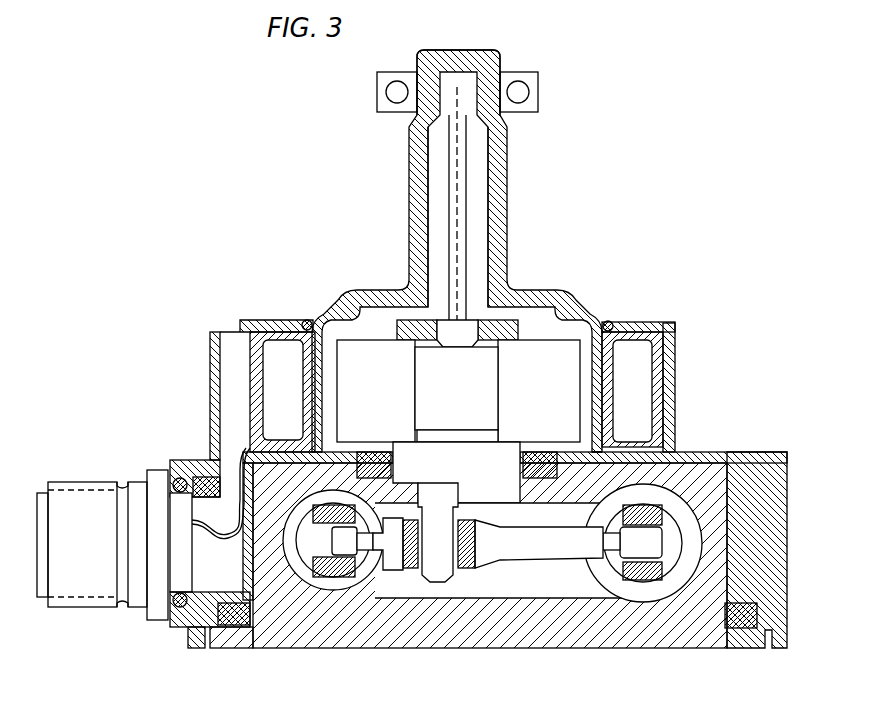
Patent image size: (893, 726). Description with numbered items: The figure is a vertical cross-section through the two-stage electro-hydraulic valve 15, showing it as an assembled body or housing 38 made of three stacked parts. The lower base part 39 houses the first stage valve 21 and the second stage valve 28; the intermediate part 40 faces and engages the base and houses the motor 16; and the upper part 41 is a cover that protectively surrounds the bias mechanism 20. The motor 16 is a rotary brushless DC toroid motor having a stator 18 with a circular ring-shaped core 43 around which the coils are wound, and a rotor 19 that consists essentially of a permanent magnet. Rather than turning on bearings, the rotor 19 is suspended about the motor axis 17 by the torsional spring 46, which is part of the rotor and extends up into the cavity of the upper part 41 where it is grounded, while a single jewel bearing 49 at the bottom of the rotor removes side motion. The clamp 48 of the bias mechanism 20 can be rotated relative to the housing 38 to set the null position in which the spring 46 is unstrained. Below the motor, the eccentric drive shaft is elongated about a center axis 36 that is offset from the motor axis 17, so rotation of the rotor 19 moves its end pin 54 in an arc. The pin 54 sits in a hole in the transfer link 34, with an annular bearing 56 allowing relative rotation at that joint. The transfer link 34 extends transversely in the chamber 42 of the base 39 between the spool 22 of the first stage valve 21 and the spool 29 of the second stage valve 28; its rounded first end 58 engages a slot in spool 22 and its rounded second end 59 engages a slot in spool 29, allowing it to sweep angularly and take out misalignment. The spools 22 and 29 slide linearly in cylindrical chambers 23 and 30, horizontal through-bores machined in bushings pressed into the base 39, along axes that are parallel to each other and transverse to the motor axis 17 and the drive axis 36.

The two-stage electro-hydraulic valve 15 is at (237, 183).
The motor 16 is at (707, 385).
The motor axis 17 is at (458, 157).
The stator 18 is at (665, 328).
The rotor 19 is at (547, 362).
The bias mechanism 20 is at (475, 193).
The first stage valve 21 is at (333, 605).
The spool 22 is at (330, 584).
The chamber 23 is at (305, 575).
The second stage valve 28 is at (615, 608).
The spool 29 is at (655, 517).
The chamber 30 is at (657, 598).
The transfer link 34 is at (535, 555).
The center axis 36 is at (437, 445).
The housing 38 is at (522, 272).
The base part 39 is at (795, 548).
The intermediate part 40 is at (210, 365).
The upper part 41 is at (368, 134).
The chamber 42 is at (465, 600).
The core 43 is at (633, 373).
The torsional spring 46 is at (447, 190).
The clamp 48 is at (517, 67).
The jewel bearing 49 is at (545, 472).
The end pin 54 is at (435, 552).
The annular bearing 56 is at (466, 580).
The first end 58 is at (325, 537).
The second end 59 is at (640, 545).